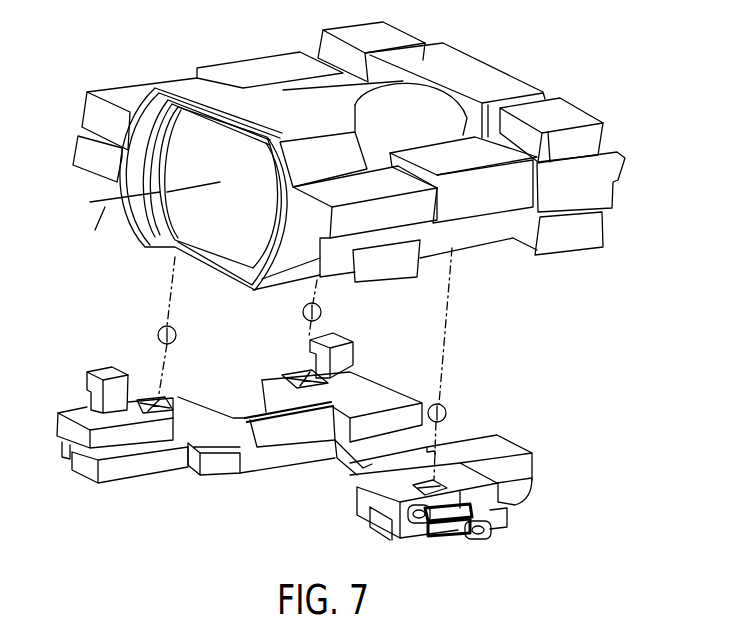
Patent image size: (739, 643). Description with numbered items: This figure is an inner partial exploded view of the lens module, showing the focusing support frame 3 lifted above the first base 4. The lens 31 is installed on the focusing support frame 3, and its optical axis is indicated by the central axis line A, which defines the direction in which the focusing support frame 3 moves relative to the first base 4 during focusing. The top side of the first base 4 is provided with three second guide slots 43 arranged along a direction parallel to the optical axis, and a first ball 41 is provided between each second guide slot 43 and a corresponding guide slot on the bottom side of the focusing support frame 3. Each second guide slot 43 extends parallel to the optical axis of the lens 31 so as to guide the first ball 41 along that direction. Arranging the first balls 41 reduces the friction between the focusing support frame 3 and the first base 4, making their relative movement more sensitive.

The focusing support frame 3 is at (478, 238).
The lens 31 is at (267, 100).
The first base 4 is at (375, 393).
The first ball 41 is at (158, 328).
The second guide slot 43 is at (155, 398).
The central axis line A is at (125, 223).